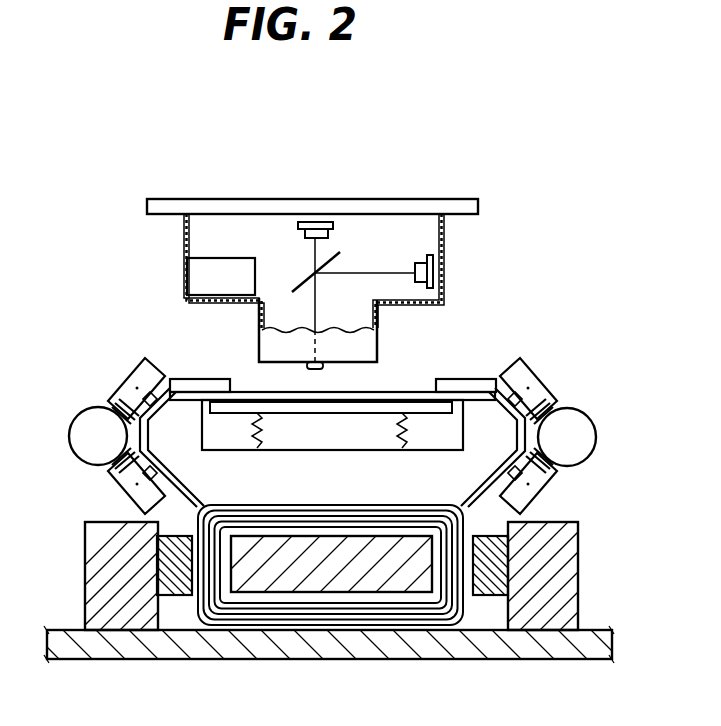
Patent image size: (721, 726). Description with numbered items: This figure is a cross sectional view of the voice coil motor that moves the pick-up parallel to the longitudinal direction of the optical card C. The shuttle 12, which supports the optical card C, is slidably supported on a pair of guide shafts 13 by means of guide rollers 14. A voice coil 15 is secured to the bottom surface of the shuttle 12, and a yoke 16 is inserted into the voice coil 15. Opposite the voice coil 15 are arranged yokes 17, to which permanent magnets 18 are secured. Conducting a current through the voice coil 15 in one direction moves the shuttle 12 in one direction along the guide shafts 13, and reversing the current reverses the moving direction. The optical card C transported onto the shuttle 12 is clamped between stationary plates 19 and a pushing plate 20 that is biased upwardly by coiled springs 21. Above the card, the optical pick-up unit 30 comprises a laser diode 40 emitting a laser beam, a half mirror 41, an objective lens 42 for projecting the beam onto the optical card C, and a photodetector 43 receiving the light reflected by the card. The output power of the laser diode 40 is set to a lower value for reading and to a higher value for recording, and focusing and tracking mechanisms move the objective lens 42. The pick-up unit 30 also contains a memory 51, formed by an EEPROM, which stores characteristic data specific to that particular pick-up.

The shuttle 12 is at (540, 390).
The guide shafts 13 is at (70, 428).
The guide rollers 14 is at (131, 378).
The voice coil 15 is at (380, 613).
The yoke 16 is at (305, 583).
The yokes 17 is at (85, 540).
The permanent magnets 18 is at (175, 590).
The stationary plates 19 is at (196, 379).
The pushing plate 20 is at (394, 410).
The coiled springs 21 is at (262, 430).
The optical pick-up unit 30 is at (446, 237).
The laser diode 40 is at (329, 222).
The half mirror 41 is at (293, 289).
The objective lens 42 is at (312, 360).
The photodetector 43 is at (427, 256).
The memory 51 is at (206, 258).
The optical card C is at (248, 392).